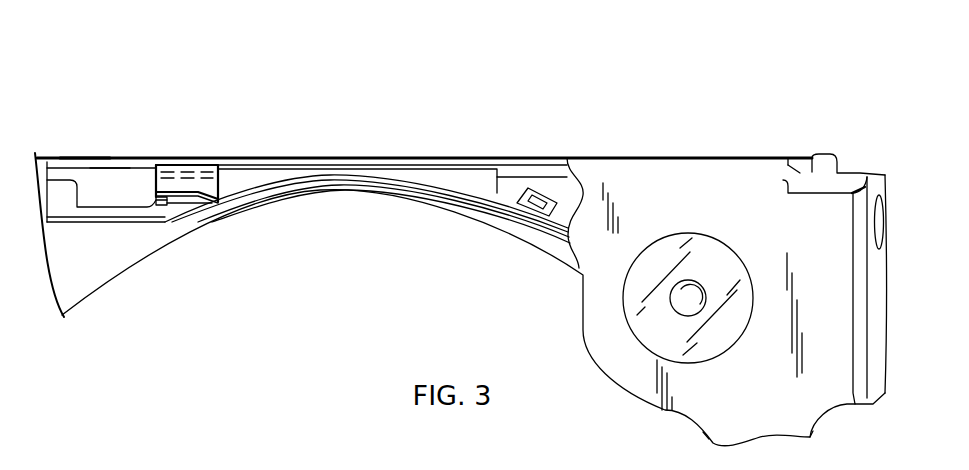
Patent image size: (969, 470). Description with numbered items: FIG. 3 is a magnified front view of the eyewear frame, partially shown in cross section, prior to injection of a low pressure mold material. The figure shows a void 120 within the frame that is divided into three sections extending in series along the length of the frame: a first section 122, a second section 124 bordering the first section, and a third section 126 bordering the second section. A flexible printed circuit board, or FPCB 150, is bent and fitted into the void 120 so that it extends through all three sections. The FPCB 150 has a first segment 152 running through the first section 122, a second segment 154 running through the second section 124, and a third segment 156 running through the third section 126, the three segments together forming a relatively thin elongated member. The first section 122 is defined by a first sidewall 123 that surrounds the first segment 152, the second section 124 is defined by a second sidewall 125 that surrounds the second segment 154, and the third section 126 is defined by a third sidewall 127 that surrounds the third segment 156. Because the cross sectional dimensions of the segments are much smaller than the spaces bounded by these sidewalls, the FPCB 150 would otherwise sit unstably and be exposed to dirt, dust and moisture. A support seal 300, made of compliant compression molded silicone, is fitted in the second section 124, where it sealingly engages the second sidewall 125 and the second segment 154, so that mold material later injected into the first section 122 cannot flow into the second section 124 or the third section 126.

The void 120 is at (460, 157).
The first section 122 is at (218, 83).
The first sidewall 123 is at (503, 215).
The second section 124 is at (155, 83).
The second sidewall 125 is at (212, 205).
The third section 126 is at (37, 83).
The third sidewall 127 is at (83, 165).
The flexible printed circuit board 150 is at (277, 178).
The first segment 152 is at (355, 172).
The second segment 154 is at (185, 170).
The third segment 156 is at (107, 163).
The support seal 300 is at (177, 187).